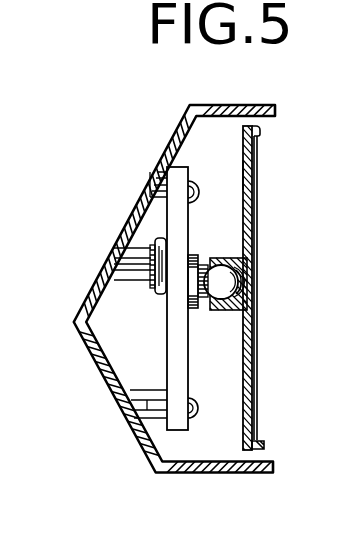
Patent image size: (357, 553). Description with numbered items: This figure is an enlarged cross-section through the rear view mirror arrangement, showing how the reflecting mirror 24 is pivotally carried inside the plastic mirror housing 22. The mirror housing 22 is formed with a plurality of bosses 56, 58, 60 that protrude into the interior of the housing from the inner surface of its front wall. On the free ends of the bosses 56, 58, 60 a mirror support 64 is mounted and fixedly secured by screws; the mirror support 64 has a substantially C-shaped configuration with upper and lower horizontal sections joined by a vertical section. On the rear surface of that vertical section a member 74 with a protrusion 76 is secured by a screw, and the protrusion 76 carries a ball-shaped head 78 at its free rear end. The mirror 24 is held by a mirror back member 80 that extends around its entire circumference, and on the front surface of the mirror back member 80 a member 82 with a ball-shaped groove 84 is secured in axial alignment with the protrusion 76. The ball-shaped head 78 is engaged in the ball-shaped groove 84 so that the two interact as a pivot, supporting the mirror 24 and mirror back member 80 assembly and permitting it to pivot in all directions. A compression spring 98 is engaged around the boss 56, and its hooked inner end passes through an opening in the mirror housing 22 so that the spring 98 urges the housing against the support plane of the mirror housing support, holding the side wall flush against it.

The mirror housing 22 is at (95, 296).
The reflecting mirror 24 is at (257, 172).
The boss 56 is at (130, 263).
The boss 58 is at (140, 427).
The boss 60 is at (161, 189).
The mirror support 64 is at (167, 326).
The member 74 is at (199, 266).
The protrusion 76 is at (201, 299).
The ball-shaped head 78 is at (222, 272).
The mirror back member 80 is at (242, 173).
The member 82 is at (229, 311).
The ball-shaped groove 84 is at (239, 281).
The compression spring 98 is at (158, 246).